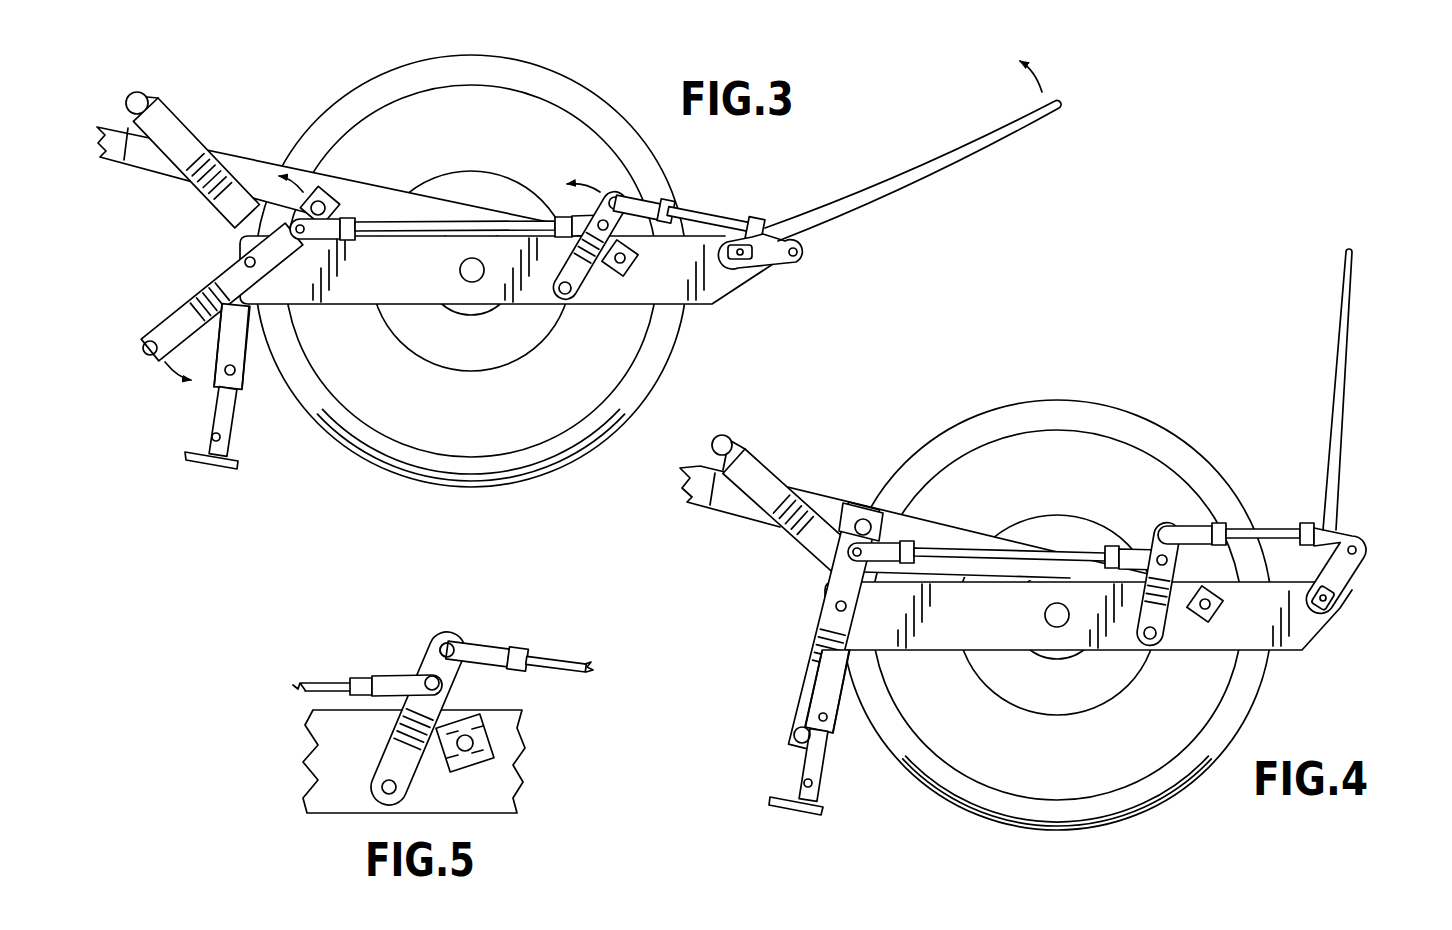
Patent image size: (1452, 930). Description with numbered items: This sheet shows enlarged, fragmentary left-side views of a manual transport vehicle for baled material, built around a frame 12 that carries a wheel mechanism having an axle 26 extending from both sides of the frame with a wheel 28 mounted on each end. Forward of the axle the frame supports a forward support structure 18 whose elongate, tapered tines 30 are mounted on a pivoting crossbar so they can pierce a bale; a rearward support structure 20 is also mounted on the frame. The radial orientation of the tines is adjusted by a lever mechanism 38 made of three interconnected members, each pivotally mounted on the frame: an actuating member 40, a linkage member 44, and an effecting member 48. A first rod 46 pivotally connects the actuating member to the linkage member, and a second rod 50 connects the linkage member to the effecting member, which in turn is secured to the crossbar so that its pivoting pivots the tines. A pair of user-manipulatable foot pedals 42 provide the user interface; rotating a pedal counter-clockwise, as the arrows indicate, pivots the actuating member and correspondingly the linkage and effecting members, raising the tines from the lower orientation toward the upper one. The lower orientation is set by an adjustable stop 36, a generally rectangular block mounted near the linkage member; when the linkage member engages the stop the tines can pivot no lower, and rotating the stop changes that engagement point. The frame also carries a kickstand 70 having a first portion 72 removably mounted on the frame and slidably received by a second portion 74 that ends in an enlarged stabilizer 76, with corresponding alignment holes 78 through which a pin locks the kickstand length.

In FIG. 3, the frame 12 is at (712, 309).
In FIG. 4, the frame 12 is at (1298, 656).
In FIG. 5, the frame 12 is at (345, 814).
In FIG. 3, the forward support structure 18 is at (1024, 139).
In FIG. 4, the forward support structure 18 is at (1366, 318).
In FIG. 3, the rearward support structure 20 is at (202, 130).
In FIG. 4, the rearward support structure 20 is at (787, 477).
In FIG. 3, the axle 26 is at (458, 272).
In FIG. 4, the axle 26 is at (1044, 615).
In FIG. 3, the wheel 28 is at (620, 105).
In FIG. 4, the wheel 28 is at (1206, 457).
In FIG. 3, the tine 30 is at (903, 170).
In FIG. 4, the tine 30 is at (1333, 383).
In FIG. 3, the adjustable stop 36 is at (645, 266).
In FIG. 4, the adjustable stop 36 is at (1218, 613).
In FIG. 5, the adjustable stop 36 is at (493, 752).
In FIG. 3, the lever mechanism 38 is at (623, 187).
In FIG. 4, the lever mechanism 38 is at (1146, 540).
In FIG. 3, the actuating member 40 is at (184, 296).
In FIG. 4, the actuating member 40 is at (805, 668).
In FIG. 3, the user-manipulatable foot pedal 42 is at (328, 200).
In FIG. 4, the user-manipulatable foot pedal 42 is at (864, 516).
In FIG. 3, the linkage member 44 is at (581, 289).
In FIG. 4, the linkage member 44 is at (1168, 634).
In FIG. 5, the linkage member 44 is at (425, 652).
In FIG. 3, the first rod 46 is at (450, 220).
In FIG. 4, the first rod 46 is at (977, 550).
In FIG. 5, the first rod 46 is at (333, 680).
In FIG. 3, the effecting member 48 is at (777, 270).
In FIG. 4, the effecting member 48 is at (1355, 587).
In FIG. 3, the second rod 50 is at (728, 226).
In FIG. 4, the second rod 50 is at (1236, 457).
In FIG. 5, the second rod 50 is at (563, 660).
In FIG. 3, the kickstand 70 is at (238, 433).
In FIG. 4, the kickstand 70 is at (826, 778).
In FIG. 3, the first portion 72 is at (258, 353).
In FIG. 4, the first portion 72 is at (842, 697).
In FIG. 3, the second portion 74 is at (207, 415).
In FIG. 4, the second portion 74 is at (793, 748).
In FIG. 3, the stabilizer 76 is at (202, 468).
In FIG. 4, the stabilizer 76 is at (786, 814).
In FIG. 3, the alignment holes 78 is at (237, 371).
In FIG. 4, the alignment holes 78 is at (827, 714).